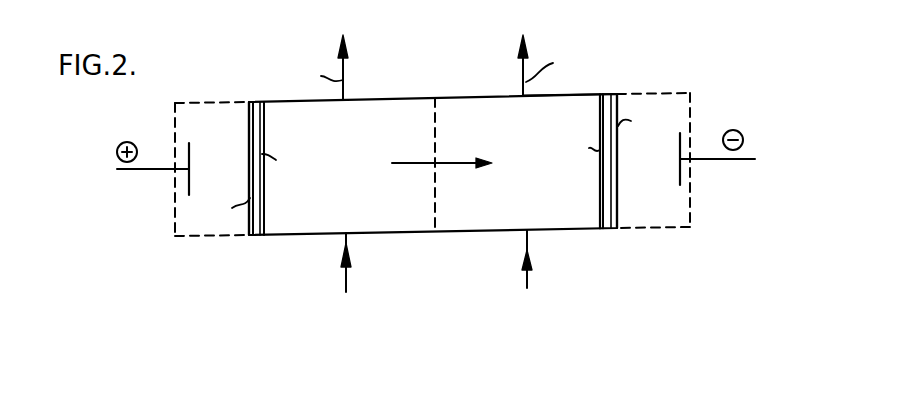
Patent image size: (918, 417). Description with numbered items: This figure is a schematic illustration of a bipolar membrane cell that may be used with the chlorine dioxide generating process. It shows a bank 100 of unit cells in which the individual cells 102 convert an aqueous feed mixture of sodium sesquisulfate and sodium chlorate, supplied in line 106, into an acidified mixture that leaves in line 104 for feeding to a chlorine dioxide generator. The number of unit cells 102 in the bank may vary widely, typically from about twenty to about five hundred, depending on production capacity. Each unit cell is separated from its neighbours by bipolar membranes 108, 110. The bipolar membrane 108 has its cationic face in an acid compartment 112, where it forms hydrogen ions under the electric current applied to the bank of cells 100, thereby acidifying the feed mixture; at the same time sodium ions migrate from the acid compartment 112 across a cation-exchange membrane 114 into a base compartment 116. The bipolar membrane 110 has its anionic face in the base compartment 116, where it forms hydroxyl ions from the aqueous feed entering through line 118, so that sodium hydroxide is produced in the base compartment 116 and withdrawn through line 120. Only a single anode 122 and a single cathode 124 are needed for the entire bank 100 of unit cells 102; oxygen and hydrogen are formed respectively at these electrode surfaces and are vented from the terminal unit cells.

The bank of unit cells 100 is at (705, 66).
The unit cell 102 is at (435, 91).
The acidified mixture line 104 is at (344, 70).
The feed mixture line 106 is at (348, 240).
The bipolar membrane 108 is at (263, 207).
The bipolar membrane 110 is at (600, 171).
The acid compartment 112 is at (310, 221).
The cation-exchange membrane 114 is at (435, 212).
The base compartment 116 is at (573, 99).
The aqueous feed line 118 is at (531, 276).
The sodium hydroxide removal line 120 is at (525, 60).
The anode 122 is at (150, 170).
The cathode 124 is at (675, 220).